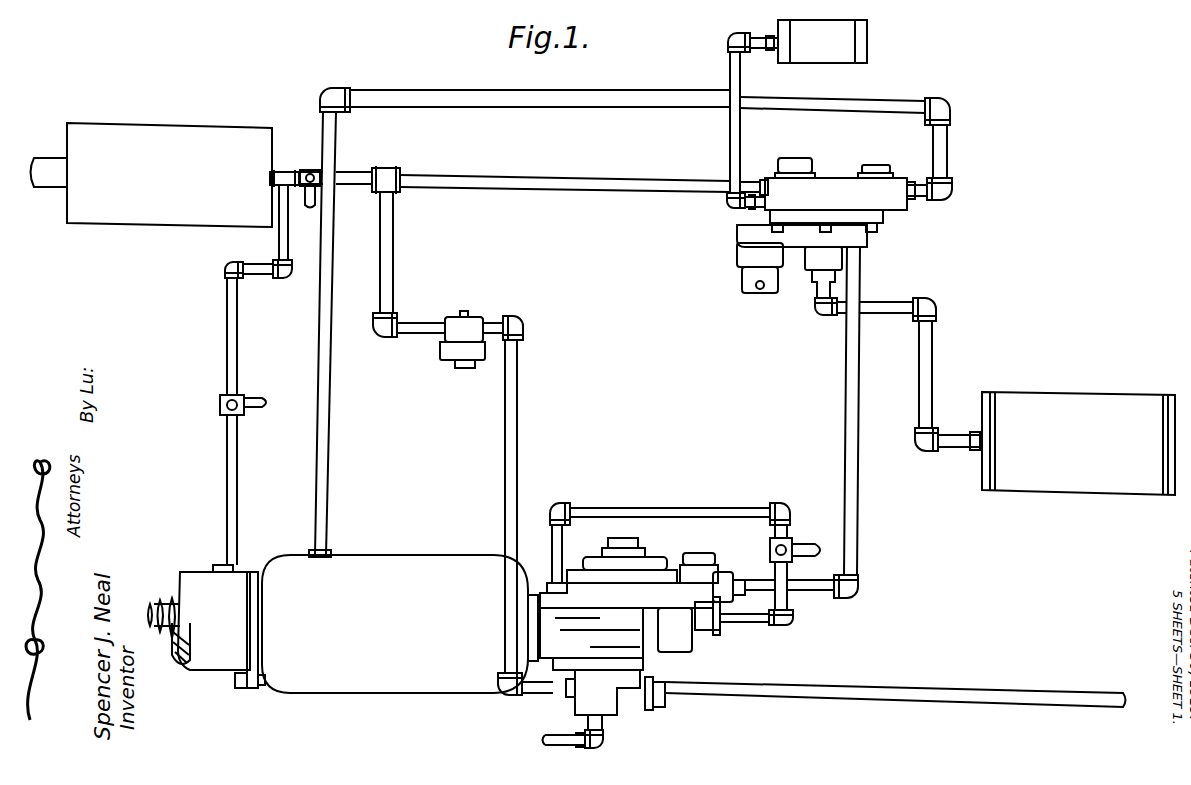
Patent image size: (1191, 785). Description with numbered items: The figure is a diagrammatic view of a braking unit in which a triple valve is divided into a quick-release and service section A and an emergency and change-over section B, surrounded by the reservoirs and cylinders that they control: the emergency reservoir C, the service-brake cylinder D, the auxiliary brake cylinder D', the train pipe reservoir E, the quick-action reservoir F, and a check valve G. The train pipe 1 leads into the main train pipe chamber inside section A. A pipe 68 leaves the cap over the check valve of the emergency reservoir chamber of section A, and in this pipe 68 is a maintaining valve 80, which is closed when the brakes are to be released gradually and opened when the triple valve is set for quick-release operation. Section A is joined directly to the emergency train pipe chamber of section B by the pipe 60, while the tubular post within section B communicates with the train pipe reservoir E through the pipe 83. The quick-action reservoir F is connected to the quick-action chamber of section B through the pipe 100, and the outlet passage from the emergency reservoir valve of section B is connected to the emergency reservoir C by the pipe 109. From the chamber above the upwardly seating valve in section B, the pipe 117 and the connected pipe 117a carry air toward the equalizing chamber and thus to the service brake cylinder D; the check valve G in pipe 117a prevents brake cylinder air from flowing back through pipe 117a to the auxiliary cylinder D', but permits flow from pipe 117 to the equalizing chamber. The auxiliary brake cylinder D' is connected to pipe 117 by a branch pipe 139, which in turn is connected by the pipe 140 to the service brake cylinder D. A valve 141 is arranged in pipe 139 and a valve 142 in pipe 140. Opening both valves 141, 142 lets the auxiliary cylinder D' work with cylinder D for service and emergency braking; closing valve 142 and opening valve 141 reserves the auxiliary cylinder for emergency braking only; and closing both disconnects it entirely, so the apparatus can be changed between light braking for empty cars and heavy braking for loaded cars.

The train pipe 1 is at (917, 690).
The pipe 60 is at (847, 368).
The pipe 68 is at (612, 512).
The maintaining valve 80 is at (817, 546).
The pipe 83 is at (927, 338).
The pipe 100 is at (730, 155).
The pipe 109 is at (948, 172).
The pipe 117 is at (620, 192).
The pipe 117a is at (518, 417).
The branch pipe 139 is at (359, 178).
The pipe 140 is at (228, 352).
The valve 141 is at (310, 170).
The valve 142 is at (220, 406).
The quick-release and service section A is at (642, 640).
The emergency and change-over section B is at (822, 219).
The emergency reservoir C is at (400, 613).
The service-brake cylinder D is at (206, 630).
The auxiliary brake cylinder D' is at (152, 175).
The train pipe reservoir E is at (1078, 443).
The quick-action reservoir F is at (822, 41).
The check valve G is at (462, 326).